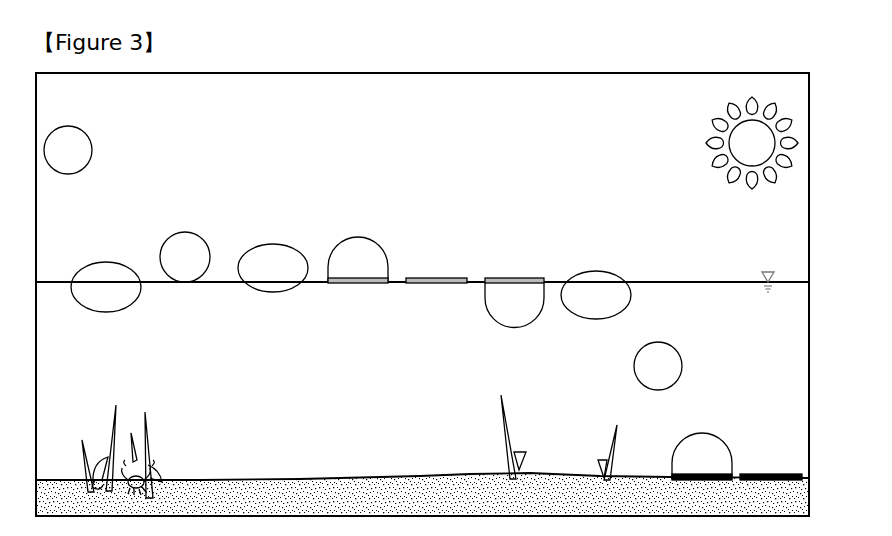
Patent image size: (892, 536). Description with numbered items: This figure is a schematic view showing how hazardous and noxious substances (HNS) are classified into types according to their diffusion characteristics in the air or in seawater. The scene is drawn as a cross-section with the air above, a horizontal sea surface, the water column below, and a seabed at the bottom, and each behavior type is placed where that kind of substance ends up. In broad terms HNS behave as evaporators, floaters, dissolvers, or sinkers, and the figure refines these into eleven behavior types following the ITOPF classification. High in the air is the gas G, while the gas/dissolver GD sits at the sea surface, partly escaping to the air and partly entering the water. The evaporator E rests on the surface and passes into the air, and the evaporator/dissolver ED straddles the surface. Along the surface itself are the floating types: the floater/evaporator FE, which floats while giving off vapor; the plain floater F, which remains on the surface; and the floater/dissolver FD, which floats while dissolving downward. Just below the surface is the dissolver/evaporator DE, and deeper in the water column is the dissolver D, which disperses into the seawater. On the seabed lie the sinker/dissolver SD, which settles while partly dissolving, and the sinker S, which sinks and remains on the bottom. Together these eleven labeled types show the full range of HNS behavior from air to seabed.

The gas G is at (68, 150).
The gas/dissolver GD is at (106, 287).
The evaporator E is at (185, 257).
The evaporator/dissolver ED is at (273, 268).
The floater/evaporator FE is at (358, 260).
The floater F is at (436, 267).
The floater/dissolver FD is at (514, 303).
The dissolver/evaporator DE is at (596, 295).
The dissolver D is at (658, 366).
The sinker/dissolver SD is at (702, 456).
The sinker S is at (771, 465).